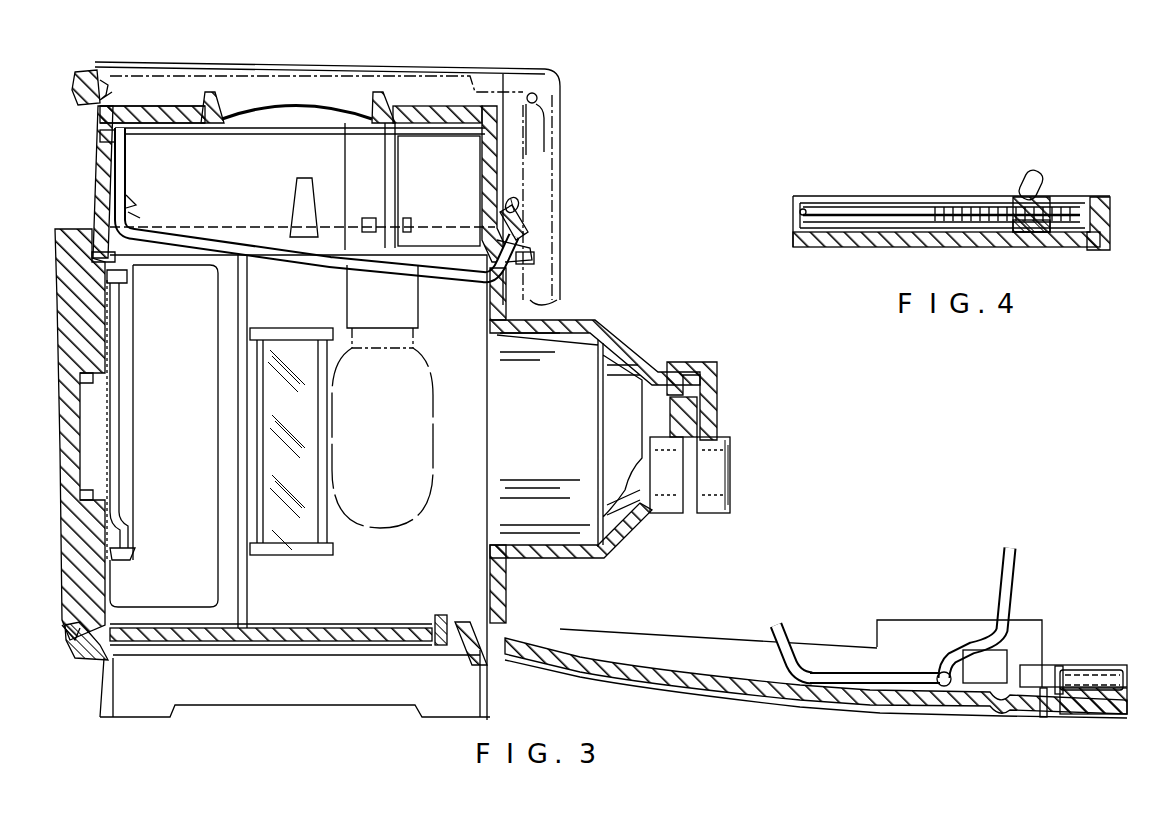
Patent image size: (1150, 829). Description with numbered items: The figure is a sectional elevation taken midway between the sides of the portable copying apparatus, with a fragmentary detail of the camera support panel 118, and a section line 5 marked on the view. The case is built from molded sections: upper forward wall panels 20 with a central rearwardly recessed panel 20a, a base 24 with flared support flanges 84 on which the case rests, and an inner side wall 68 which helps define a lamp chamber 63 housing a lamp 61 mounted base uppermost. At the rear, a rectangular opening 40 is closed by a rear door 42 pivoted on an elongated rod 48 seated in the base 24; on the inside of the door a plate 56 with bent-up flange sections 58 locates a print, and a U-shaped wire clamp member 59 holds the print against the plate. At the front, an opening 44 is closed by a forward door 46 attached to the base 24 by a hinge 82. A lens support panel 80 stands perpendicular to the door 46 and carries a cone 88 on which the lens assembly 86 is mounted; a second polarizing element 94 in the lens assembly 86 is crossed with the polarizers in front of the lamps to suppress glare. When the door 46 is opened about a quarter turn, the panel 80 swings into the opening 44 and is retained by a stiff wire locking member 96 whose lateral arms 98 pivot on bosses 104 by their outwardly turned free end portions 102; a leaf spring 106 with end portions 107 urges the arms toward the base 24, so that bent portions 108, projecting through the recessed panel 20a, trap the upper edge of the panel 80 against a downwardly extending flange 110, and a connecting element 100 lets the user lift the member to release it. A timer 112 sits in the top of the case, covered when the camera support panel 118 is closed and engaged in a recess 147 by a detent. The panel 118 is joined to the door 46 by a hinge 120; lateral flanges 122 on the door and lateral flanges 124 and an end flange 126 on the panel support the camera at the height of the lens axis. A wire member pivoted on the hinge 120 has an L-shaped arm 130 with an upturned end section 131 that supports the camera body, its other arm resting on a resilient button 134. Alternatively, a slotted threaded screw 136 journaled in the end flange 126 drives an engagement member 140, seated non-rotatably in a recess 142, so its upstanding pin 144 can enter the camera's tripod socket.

In FIG. 3, the section line 5- 5 is at (72, 163).
In FIG. 3, the upper forward wall panels 20 is at (512, 172).
In FIG. 3, the central rearwardly recessed panel 20a is at (485, 193).
In FIG. 3, the base 24 is at (358, 650).
In FIG. 3, the rectangular opening 40 is at (112, 257).
In FIG. 3, the rear door 42 is at (62, 420).
In FIG. 3, the opening 44 is at (525, 252).
In FIG. 3, the forward door 46 is at (560, 186).
In FIG. 3, the elongated bar or rod 48 is at (74, 632).
In FIG. 3, the frame or plate 56 is at (112, 393).
In FIG. 3, the bent-up flange sections 58 is at (125, 565).
In FIG. 3, the clamp member 59 is at (114, 470).
In FIG. 3, the lamp 61 is at (406, 505).
In FIG. 3, the chamber 63 is at (516, 577).
In FIG. 3, the inner side wall 68 is at (293, 487).
In FIG. 3, the lens support panel 80 is at (488, 298).
In FIG. 3, the hinge 82 is at (445, 616).
In FIG. 3, the support flanges 84 is at (232, 698).
In FIG. 3, the lens assembly 86 is at (718, 378).
In FIG. 3, the cone 88 is at (590, 320).
In FIG. 3, the second polarizing element 94 is at (698, 420).
In FIG. 3, the locking member 96 is at (320, 240).
In FIG. 3, the lateral arms 98 is at (128, 180).
In FIG. 3, the connecting element 100 is at (518, 206).
In FIG. 3, the free end portions 102 is at (115, 112).
In FIG. 3, the bosses 104 is at (135, 140).
In FIG. 3, the leaf spring 106 is at (148, 204).
In FIG. 3, the end portions 107 is at (136, 215).
In FIG. 3, the bent portions 108 is at (520, 228).
In FIG. 3, the flange 110 is at (528, 258).
In FIG. 3, the timer 112 is at (385, 90).
In FIG. 3, the camera support panel 118 is at (287, 62).
In FIG. 4, the camera support panel 118 is at (925, 250).
In FIG. 3, the hinge 120 is at (1030, 662).
In FIG. 3, the lateral flanges 122 is at (742, 635).
In FIG. 3, the lateral flanges 124 is at (1045, 670).
In FIG. 4, the end flange 126 is at (1110, 243).
In FIG. 3, the L-shaped arm 130 is at (845, 672).
In FIG. 3, the upturned end section 131 is at (805, 606).
In FIG. 3, the resilient button 134 is at (1000, 652).
In FIG. 3, the threaded screw 136 is at (1096, 670).
In FIG. 4, the threaded screw 136 is at (958, 182).
In FIG. 4, the engagement member 140 is at (1052, 195).
In FIG. 3, the recess 142 is at (1106, 716).
In FIG. 4, the recess 142 is at (987, 235).
In FIG. 4, the upstanding pin 144 is at (1035, 176).
In FIG. 3, the recess 147 is at (74, 88).